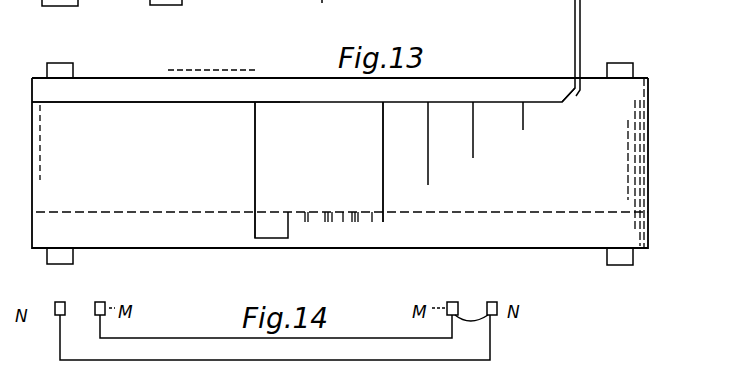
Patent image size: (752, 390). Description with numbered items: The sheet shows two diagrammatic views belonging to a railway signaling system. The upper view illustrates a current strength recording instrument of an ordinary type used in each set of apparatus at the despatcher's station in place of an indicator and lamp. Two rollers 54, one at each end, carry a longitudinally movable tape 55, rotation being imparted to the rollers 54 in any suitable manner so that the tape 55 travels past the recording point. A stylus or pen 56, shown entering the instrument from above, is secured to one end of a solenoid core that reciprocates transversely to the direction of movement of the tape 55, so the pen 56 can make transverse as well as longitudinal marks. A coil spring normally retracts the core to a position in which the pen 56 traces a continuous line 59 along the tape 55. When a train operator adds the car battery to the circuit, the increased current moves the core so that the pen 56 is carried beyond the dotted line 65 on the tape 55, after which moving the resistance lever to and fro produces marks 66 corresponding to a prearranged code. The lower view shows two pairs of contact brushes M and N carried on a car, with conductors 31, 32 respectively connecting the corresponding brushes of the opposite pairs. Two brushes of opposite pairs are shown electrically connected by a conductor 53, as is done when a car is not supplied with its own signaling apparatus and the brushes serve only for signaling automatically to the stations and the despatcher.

In FIG. 13, the rollers 54 is at (62, 60).
In FIG. 13, the tape 55 is at (128, 72).
In FIG. 13, the continuous line 59 is at (155, 103).
In FIG. 13, the dotted line 65 is at (128, 211).
In FIG. 13, the marks 66 is at (263, 158).
In FIG. 13, the stylus or pen 56 is at (582, 58).
In FIG. 14, the connecting wire 31 is at (276, 326).
In FIG. 14, the connecting wire 32 is at (275, 349).
In FIG. 14, the conductor 53 is at (470, 326).